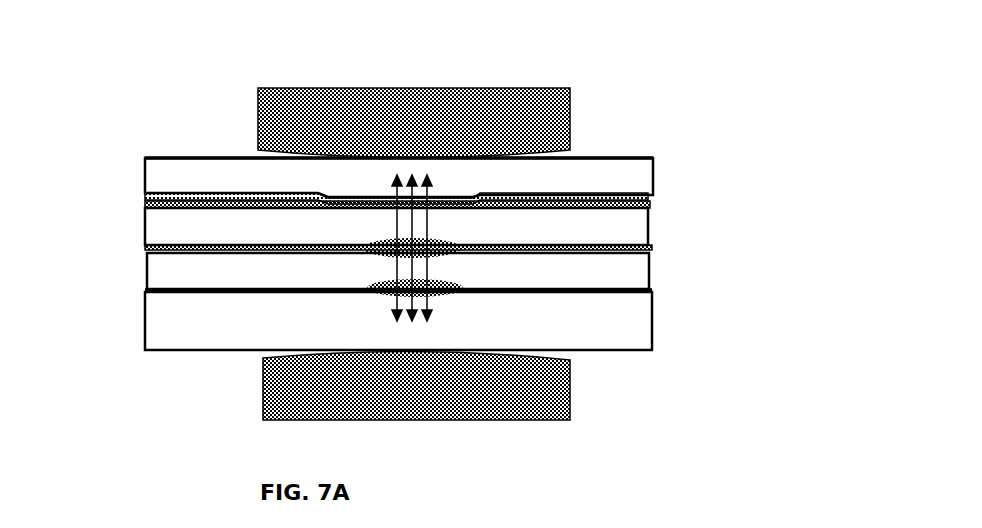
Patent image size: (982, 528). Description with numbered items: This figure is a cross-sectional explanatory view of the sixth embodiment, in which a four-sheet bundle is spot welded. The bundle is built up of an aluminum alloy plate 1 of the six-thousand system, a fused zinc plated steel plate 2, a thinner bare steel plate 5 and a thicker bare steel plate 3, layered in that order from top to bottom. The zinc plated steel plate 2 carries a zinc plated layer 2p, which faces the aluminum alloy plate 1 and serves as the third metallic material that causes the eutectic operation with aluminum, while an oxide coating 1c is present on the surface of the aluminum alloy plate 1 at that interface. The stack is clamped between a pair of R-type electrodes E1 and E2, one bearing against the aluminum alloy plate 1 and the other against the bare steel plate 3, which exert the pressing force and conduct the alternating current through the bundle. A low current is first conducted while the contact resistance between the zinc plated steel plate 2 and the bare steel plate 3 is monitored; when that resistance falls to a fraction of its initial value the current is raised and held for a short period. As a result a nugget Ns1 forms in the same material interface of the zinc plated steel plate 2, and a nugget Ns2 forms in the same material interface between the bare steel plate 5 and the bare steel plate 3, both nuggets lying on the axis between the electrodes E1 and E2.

The electrode E1 is at (404, 110).
The electrode E2 is at (423, 393).
The aluminum alloy plate 1 is at (587, 178).
The oxide coating 1c is at (202, 197).
The zinc plated layer 2p is at (648, 208).
The zinc plated steel plate 2 is at (633, 225).
The bare steel plate 5 is at (160, 266).
The bare steel plate 3 is at (635, 323).
The nugget Ns1 is at (448, 255).
The nugget Ns2 is at (378, 292).